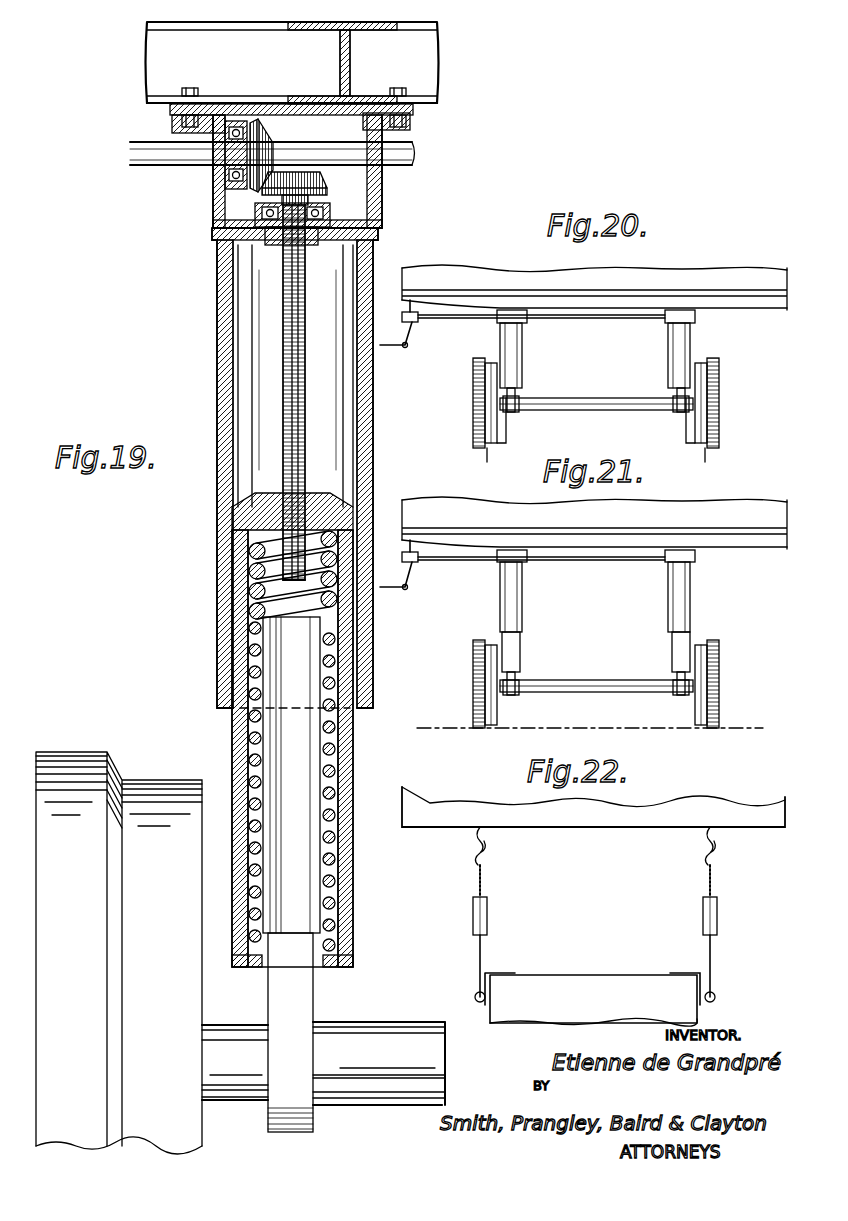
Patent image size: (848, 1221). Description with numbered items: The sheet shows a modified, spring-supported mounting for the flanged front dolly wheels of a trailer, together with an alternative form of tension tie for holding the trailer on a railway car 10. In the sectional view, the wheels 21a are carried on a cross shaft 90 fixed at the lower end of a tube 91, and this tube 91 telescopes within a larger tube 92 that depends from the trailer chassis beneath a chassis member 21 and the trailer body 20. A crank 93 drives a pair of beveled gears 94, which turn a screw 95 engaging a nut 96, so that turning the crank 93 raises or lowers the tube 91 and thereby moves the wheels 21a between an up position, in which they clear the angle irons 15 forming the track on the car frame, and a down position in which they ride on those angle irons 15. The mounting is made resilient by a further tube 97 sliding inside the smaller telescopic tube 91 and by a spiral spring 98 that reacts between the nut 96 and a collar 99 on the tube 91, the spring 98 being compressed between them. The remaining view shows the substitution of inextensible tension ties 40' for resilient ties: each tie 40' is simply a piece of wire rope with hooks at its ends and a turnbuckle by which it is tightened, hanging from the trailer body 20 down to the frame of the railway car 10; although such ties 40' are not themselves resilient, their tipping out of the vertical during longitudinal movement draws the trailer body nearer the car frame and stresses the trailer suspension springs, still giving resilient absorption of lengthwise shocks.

In FIG. 22, the railway car 10 is at (622, 972).
In FIG. 20, the angle irons 15 is at (503, 446).
In FIG. 20, the deck 20 is at (717, 273).
In FIG. 21, the deck 20 is at (738, 513).
In FIG. 22, the deck 20 is at (640, 810).
In FIG. 19, the beam 21 is at (418, 87).
In FIG. 20, the beam 21 is at (477, 302).
In FIG. 21, the beam 21 is at (640, 538).
In FIG. 19, the wheels 21a is at (134, 780).
In FIG. 20, the wheels 21a is at (470, 370).
In FIG. 21, the wheels 21a is at (475, 660).
In FIG. 22, the inextensible tension ties 40' is at (595, 914).
In FIG. 19, the cross shaft 90 is at (360, 1014).
In FIG. 20, the cross shaft 90 is at (600, 397).
In FIG. 21, the cross shaft 90 is at (602, 680).
In FIG. 19, the tube 91 is at (354, 771).
In FIG. 21, the tube 91 is at (521, 664).
In FIG. 19, the tube 92 is at (218, 366).
In FIG. 20, the tube 92 is at (522, 346).
In FIG. 21, the tube 92 is at (522, 582).
In FIG. 20, the crank 93 is at (393, 352).
In FIG. 21, the crank 93 is at (393, 592).
In FIG. 19, the beveled gears 94 is at (286, 172).
In FIG. 19, the screw 95 is at (300, 412).
In FIG. 19, the nut 96 is at (332, 500).
In FIG. 19, the tube 97 is at (332, 858).
In FIG. 20, the tube 97 is at (520, 400).
In FIG. 19, the spiral spring 98 is at (333, 893).
In FIG. 19, the collar 99 is at (252, 962).